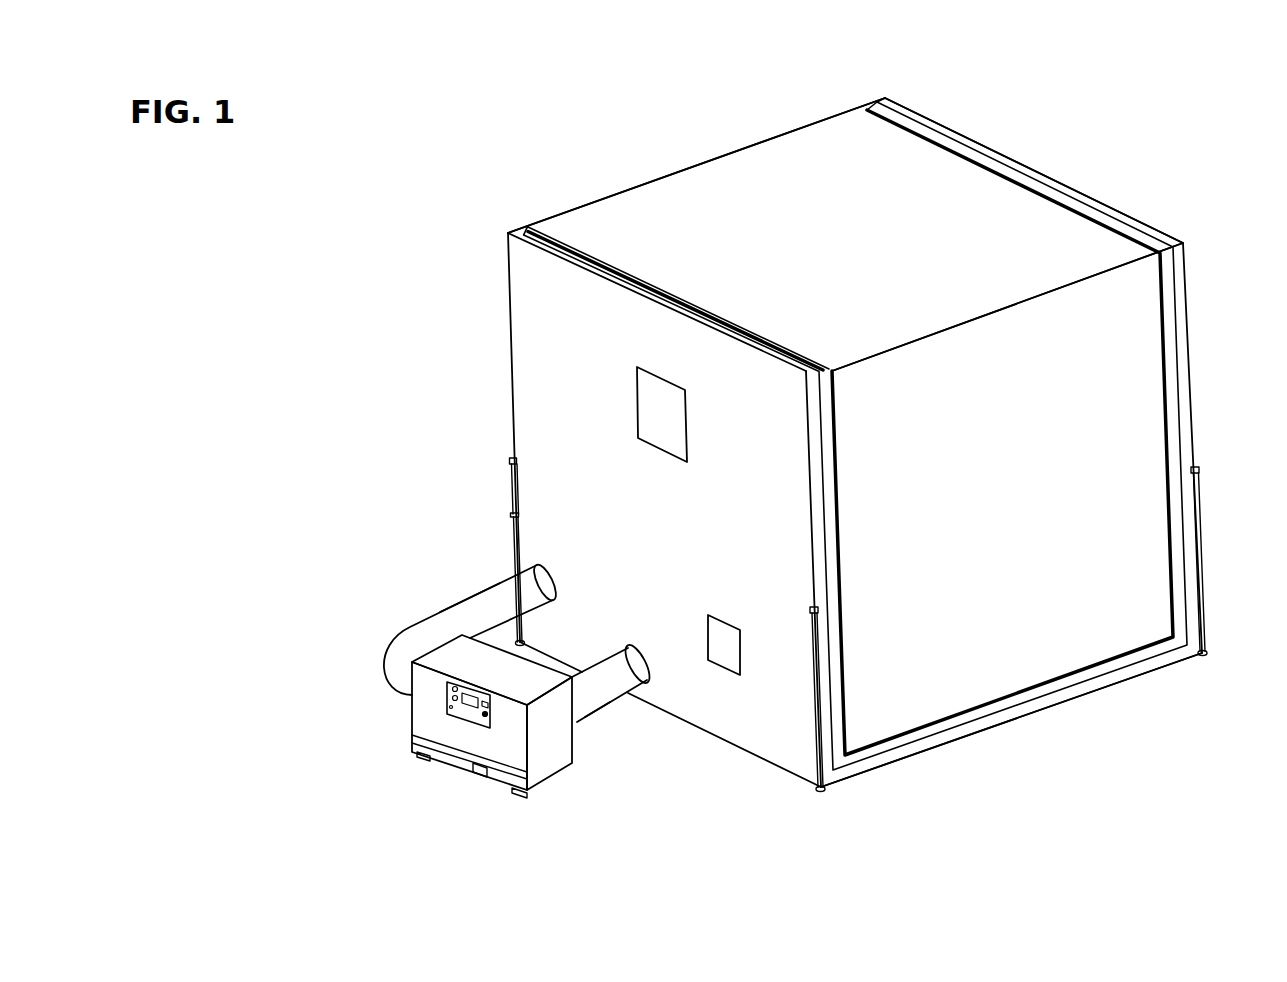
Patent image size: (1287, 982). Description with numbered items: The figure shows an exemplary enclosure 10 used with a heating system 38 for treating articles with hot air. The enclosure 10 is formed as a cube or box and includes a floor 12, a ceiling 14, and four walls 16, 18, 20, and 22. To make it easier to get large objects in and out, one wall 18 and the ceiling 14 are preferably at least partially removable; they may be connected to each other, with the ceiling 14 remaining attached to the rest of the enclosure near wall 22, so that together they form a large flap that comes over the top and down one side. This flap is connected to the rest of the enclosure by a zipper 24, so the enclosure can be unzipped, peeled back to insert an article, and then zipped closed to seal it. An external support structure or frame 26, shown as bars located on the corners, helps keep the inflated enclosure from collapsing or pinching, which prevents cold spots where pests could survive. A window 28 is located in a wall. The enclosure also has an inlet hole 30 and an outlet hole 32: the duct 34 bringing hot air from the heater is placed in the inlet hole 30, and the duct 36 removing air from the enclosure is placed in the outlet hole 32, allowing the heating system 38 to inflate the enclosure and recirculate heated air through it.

The enclosure 10 is at (362, 186).
The floor 12 is at (840, 782).
The ceiling 14 is at (603, 223).
The wall 16 is at (537, 383).
The wall 18 is at (1130, 397).
The wall 20 is at (1023, 167).
The wall 22 is at (747, 147).
The zipper 24 is at (1107, 222).
The frame 26 is at (510, 490).
The window 28 is at (657, 425).
The inlet hole 30 is at (548, 573).
The outlet hole 32 is at (640, 653).
The duct 34 is at (510, 600).
The duct 36 is at (580, 692).
The heating system 38 is at (412, 718).